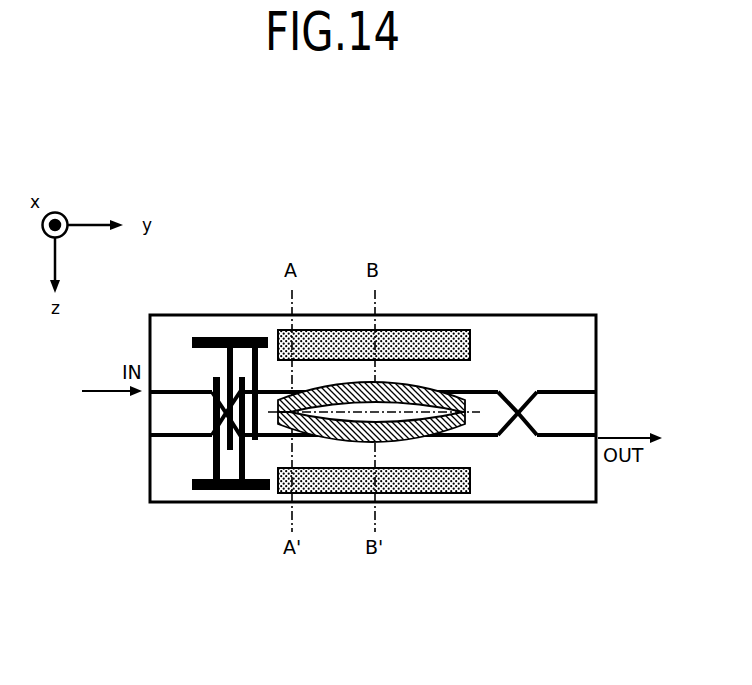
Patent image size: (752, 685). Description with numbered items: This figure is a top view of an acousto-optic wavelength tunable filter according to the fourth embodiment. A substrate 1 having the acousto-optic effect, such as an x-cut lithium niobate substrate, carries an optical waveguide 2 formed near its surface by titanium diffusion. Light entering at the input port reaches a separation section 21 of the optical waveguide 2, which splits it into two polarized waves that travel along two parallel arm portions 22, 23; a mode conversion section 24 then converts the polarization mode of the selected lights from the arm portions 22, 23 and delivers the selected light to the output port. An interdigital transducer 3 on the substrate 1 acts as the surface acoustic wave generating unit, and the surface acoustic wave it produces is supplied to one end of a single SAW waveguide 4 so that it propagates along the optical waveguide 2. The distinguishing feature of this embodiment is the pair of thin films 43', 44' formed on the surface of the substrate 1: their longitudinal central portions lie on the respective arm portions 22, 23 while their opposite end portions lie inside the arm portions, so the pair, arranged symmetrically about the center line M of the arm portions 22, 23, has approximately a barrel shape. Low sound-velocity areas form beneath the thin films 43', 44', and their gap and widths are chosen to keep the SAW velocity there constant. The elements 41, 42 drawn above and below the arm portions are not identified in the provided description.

The substrate 1 is at (578, 503).
The optical waveguide 2 is at (170, 365).
The interdigital transducer 3 is at (216, 492).
The SAW waveguide 4 is at (383, 392).
The separation section 21 is at (223, 400).
The arm portion 22 is at (485, 393).
The arm portion 23 is at (489, 408).
The mode conversion section 24 is at (518, 395).
The upper cladding region 41 is at (382, 342).
The lower cladding region 42 is at (395, 482).
The thin film 43' is at (371, 337).
The thin film 44' is at (371, 484).
The center line M is at (526, 433).